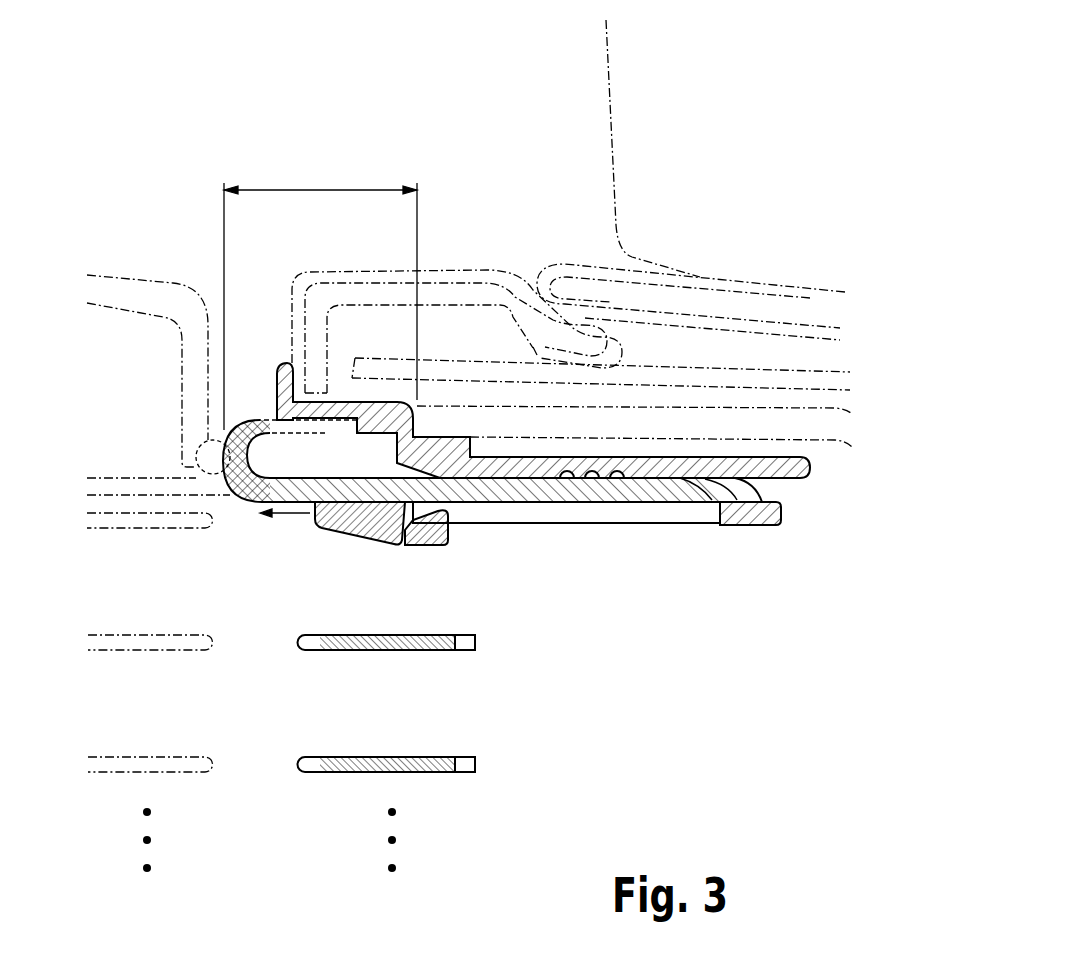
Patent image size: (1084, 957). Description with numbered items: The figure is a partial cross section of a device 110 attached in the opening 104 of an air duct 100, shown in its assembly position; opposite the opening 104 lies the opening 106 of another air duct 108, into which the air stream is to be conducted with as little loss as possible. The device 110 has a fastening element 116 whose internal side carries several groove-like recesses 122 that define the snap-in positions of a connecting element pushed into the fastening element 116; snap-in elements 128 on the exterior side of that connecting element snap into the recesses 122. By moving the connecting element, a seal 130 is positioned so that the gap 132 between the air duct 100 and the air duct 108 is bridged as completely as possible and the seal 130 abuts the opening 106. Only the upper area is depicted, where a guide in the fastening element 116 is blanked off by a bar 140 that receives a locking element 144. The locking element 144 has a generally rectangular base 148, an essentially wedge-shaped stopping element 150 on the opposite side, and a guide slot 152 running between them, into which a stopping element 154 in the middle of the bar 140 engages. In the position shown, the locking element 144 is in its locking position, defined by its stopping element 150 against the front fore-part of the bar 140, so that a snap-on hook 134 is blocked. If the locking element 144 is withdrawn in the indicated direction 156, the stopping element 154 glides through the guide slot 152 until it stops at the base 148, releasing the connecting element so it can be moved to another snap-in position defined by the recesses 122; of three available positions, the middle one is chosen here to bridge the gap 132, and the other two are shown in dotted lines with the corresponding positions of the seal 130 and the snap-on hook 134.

The air duct 100 is at (828, 423).
The opening 104 is at (371, 712).
The opening 106 is at (133, 712).
The air duct 108 is at (137, 482).
The device 110 is at (731, 663).
The fastening element 116 is at (797, 468).
The groove-like recesses 122 is at (563, 457).
The snap-in elements 128 is at (590, 482).
The seal 130 is at (247, 418).
The gap 132 is at (318, 188).
The snap-on hook 134 is at (653, 492).
The bar 140 is at (422, 544).
The locking element 144 is at (790, 513).
The base 148 is at (745, 526).
The stopping element 150 is at (350, 527).
The guide slot 152 is at (528, 517).
The stopping element 154 is at (445, 513).
The indicated direction 156 is at (297, 517).